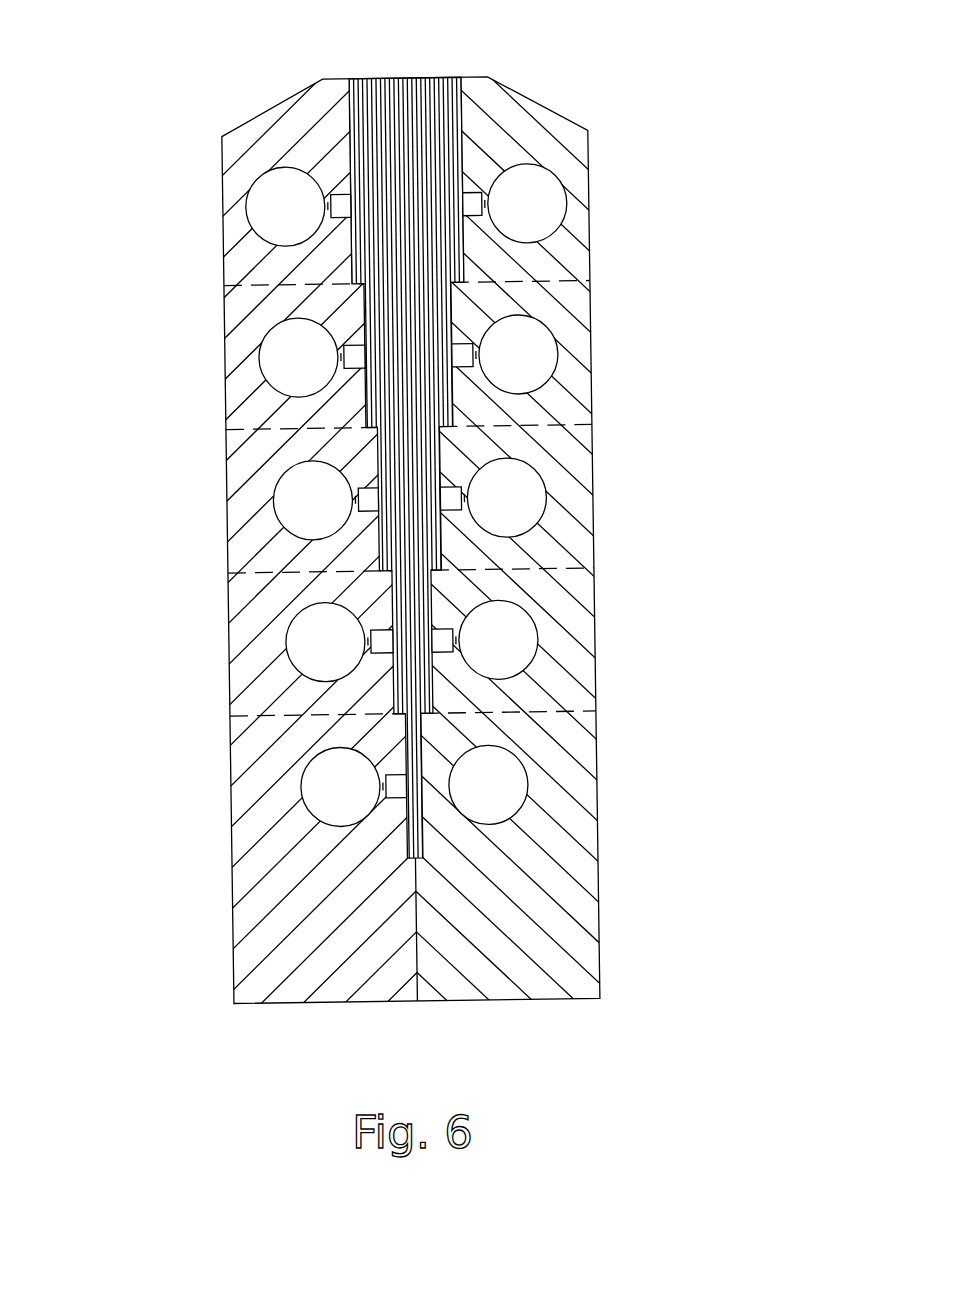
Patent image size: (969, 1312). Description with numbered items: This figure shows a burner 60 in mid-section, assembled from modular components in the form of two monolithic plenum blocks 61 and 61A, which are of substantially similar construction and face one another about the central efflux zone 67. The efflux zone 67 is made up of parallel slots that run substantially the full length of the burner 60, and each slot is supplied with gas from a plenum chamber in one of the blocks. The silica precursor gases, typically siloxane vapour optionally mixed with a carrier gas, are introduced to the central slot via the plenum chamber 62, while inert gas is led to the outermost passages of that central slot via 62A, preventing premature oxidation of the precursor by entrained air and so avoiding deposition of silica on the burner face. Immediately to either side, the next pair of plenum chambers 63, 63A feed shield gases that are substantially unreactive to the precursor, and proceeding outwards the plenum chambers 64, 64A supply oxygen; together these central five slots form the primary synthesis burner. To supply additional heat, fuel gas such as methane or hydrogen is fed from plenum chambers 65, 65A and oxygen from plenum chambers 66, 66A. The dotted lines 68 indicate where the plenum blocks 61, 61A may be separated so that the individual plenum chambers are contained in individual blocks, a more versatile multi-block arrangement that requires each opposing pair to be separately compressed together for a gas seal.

The burner 60 is at (461, 940).
The plenum block 61 is at (246, 580).
The plenum block 61A is at (594, 578).
The plenum chamber 62 is at (239, 779).
The plenum chamber 62A is at (616, 771).
The plenum chamber 63 is at (232, 631).
The plenum chamber 63A is at (605, 624).
The plenum chamber 64 is at (225, 490).
The plenum chamber 64A is at (610, 484).
The plenum chamber 65 is at (218, 348).
The plenum chamber 65A is at (614, 342).
The plenum chamber 66 is at (211, 187).
The plenum chamber 66A is at (619, 180).
The efflux zone 67 is at (431, 429).
The dotted lines 68 is at (494, 460).